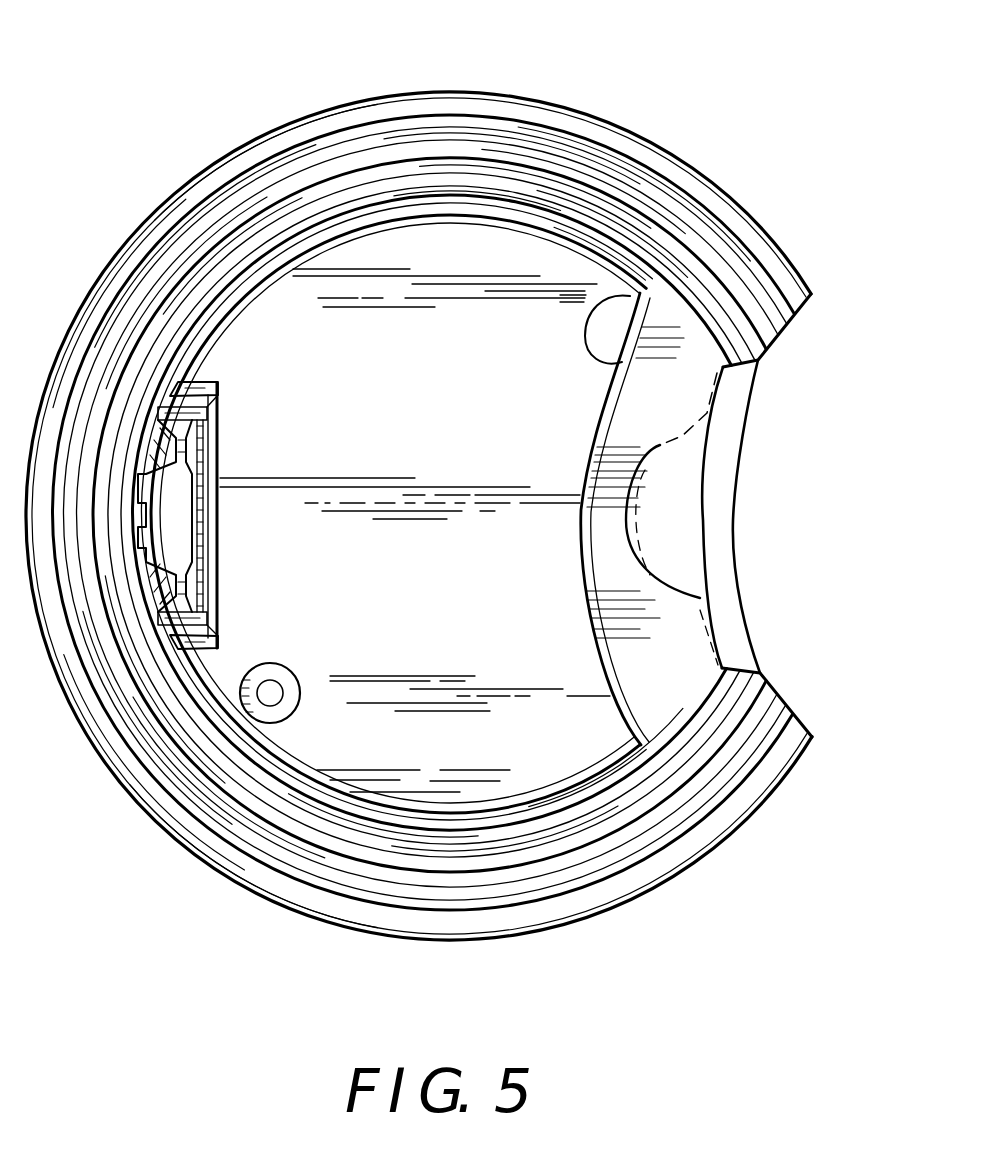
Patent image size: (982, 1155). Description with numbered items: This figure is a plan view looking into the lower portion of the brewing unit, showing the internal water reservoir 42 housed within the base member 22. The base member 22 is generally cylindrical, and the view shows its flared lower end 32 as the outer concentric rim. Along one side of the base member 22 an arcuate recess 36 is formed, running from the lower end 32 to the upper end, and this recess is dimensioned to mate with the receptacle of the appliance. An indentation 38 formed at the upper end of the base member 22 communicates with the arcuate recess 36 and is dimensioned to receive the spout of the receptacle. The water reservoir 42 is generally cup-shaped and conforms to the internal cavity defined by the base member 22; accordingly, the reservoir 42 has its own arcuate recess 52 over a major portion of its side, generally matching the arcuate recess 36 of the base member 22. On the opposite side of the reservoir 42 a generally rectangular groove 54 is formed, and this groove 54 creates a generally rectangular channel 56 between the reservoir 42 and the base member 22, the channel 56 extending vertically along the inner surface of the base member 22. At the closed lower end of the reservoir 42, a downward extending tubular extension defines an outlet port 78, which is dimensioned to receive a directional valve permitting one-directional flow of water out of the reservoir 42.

The base member 22 is at (458, 148).
The flared lower end 32 is at (140, 242).
The arcuate recess 36 is at (732, 424).
The indentation 38 is at (670, 543).
The water reservoir 42 is at (516, 332).
The arcuate recess 52 is at (602, 298).
The rectangular groove 54 is at (219, 436).
The channel 56 is at (168, 536).
The outlet port 78 is at (269, 691).